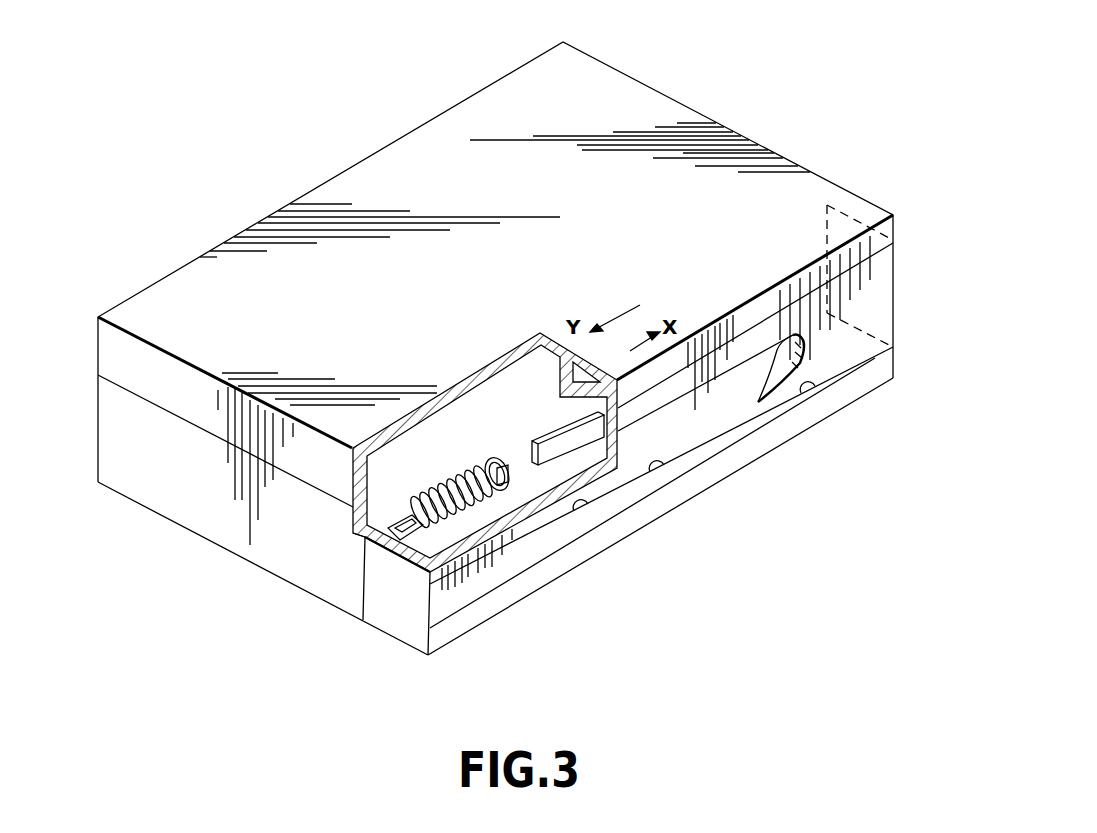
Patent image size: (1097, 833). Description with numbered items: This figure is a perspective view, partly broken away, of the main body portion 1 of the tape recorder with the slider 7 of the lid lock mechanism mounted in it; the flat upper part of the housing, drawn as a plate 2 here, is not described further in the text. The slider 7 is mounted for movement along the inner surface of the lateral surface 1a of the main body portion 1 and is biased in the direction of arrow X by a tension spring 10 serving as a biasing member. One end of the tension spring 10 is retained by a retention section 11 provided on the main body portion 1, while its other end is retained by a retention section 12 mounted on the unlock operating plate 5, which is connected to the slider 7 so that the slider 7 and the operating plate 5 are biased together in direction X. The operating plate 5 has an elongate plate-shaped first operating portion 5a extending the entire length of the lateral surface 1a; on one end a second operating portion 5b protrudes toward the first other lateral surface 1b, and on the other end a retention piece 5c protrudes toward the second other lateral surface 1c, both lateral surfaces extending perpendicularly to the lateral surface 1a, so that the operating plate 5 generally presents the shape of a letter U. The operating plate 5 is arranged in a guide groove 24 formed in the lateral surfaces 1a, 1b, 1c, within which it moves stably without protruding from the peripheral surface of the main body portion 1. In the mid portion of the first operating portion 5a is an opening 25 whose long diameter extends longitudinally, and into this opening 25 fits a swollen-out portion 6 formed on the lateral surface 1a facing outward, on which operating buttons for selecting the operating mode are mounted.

The main body portion 1 is at (275, 553).
The lateral surface 1a is at (625, 527).
The first other lateral surface 1b is at (698, 104).
The second other lateral surface 1c is at (147, 487).
The cover plate 2 is at (812, 170).
The unlock operating plate 5 is at (838, 363).
The first operating portion 5a is at (522, 553).
The second operating portion 5b is at (875, 277).
The retention piece 5c is at (398, 590).
The swollen-out portion 6 is at (698, 418).
The slider 7 is at (547, 440).
The tension spring 10 is at (467, 470).
The retention section 11 is at (497, 456).
The retention section 12 is at (395, 515).
The guide groove 24 is at (815, 392).
The opening 25 is at (657, 465).